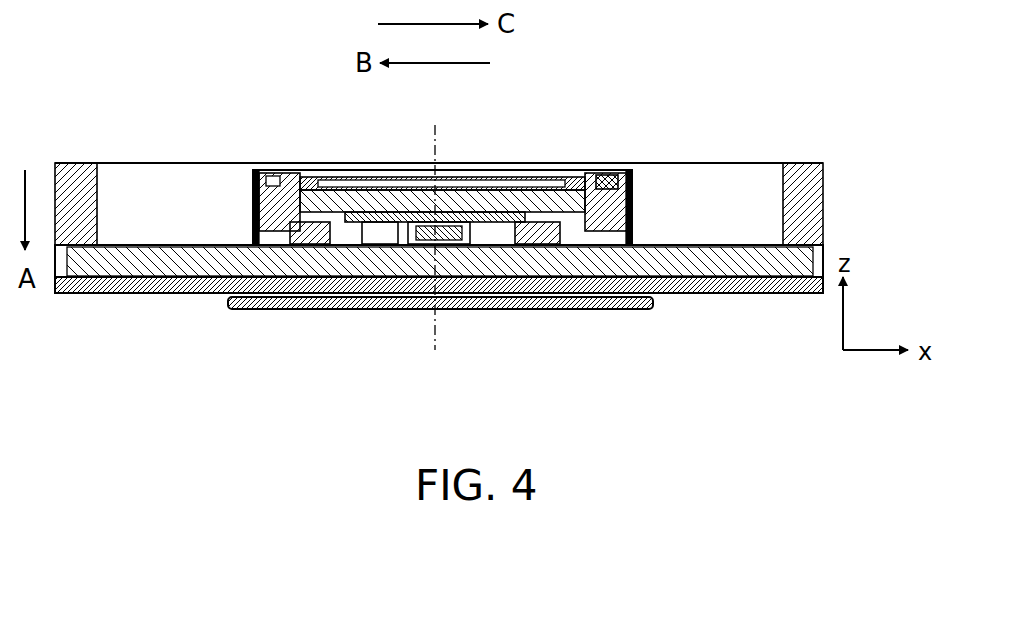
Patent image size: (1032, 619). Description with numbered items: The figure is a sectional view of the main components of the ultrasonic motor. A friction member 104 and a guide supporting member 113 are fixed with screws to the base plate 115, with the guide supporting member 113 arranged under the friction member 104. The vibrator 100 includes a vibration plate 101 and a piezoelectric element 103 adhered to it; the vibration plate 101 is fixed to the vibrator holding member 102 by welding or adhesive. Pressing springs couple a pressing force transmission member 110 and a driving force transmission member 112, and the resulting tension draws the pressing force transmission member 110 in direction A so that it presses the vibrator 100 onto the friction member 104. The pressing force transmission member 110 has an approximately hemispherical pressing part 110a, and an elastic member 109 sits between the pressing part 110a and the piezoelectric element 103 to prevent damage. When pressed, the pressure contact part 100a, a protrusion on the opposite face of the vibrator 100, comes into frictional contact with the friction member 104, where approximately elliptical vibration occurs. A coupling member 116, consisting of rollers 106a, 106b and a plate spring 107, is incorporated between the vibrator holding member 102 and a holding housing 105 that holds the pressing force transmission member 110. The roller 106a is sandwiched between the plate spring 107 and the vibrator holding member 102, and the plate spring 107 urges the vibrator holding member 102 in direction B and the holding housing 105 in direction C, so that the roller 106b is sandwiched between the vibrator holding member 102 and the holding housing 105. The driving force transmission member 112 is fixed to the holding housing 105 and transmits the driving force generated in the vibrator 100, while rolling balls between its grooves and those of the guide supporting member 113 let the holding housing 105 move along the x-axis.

The vibrator 100 is at (393, 328).
The pressure contact part 100a is at (430, 280).
The vibration plate 101 is at (375, 235).
The vibrator holding member 102 is at (246, 207).
The piezoelectric element 103 is at (420, 236).
The friction member 104 is at (195, 268).
The holding housing 105 is at (258, 192).
The roller 106a is at (588, 172).
The roller 106b is at (275, 170).
The plate spring 107 is at (640, 145).
The elastic member 109 is at (462, 235).
The pressing force transmission member 110 is at (350, 176).
The pressing part 110a is at (420, 180).
The driving force transmission member 112 is at (583, 302).
The guide supporting member 113 is at (678, 292).
The base plate 115 is at (795, 165).
The coupling member 116 is at (630, 135).